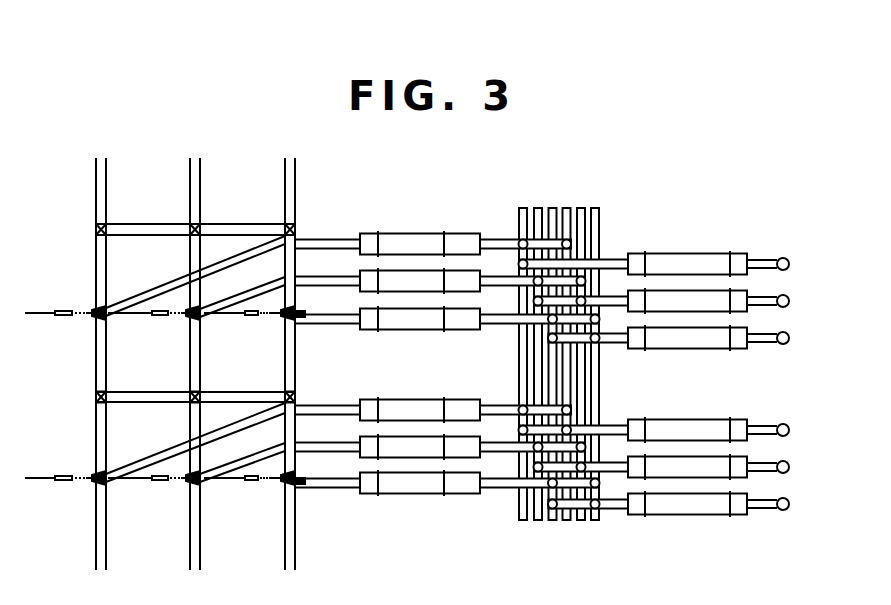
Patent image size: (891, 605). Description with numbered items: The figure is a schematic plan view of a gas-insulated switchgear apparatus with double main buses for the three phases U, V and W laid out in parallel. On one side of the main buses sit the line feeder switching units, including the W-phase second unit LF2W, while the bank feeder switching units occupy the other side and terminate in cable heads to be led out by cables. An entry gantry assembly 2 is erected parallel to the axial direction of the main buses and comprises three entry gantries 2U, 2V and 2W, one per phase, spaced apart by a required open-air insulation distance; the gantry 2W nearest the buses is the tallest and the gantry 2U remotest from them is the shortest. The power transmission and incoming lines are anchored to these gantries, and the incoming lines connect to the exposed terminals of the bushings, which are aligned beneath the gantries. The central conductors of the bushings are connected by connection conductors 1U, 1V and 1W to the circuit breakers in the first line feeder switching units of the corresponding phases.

The connection conductor 1U is at (153, 290).
The connection conductor 1V is at (248, 298).
The connection conductor 1W is at (323, 319).
The entry gantry assembly 2 is at (296, 524).
The entry gantry 2U is at (107, 565).
The entry gantry 2V is at (201, 565).
The entry gantry 2W is at (297, 567).
The line feeder switching unit LF2W is at (442, 494).